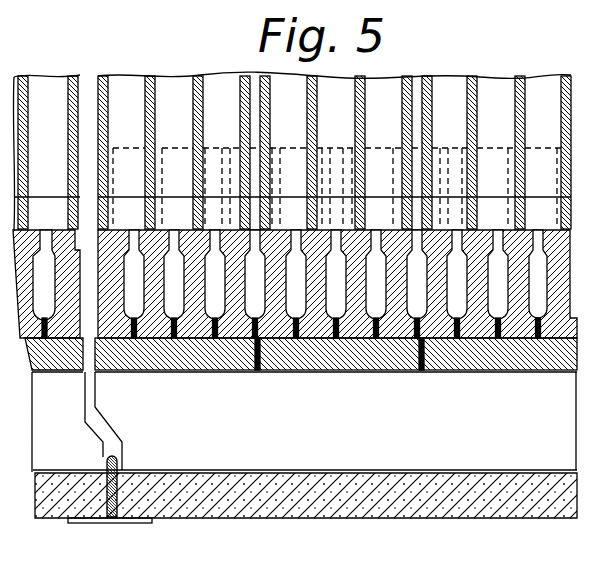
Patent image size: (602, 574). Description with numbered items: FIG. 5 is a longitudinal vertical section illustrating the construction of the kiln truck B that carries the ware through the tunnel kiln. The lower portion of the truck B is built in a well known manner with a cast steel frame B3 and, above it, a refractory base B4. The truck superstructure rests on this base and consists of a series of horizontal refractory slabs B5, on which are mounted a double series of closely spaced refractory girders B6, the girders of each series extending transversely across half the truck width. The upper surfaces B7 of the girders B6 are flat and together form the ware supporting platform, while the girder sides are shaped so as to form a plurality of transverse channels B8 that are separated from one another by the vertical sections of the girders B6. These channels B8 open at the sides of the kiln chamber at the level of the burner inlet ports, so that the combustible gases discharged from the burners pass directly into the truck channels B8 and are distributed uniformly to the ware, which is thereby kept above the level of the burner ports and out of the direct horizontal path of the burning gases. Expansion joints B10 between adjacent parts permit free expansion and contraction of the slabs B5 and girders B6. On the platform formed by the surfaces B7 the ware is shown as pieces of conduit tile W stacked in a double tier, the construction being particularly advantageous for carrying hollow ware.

The conduit tile W is at (567, 88).
The upper surfaces of the girders B7 is at (523, 228).
The refractory girders B6 is at (570, 318).
The transverse channels B8 is at (335, 310).
The expansion joints B10 is at (188, 345).
The horizontal refractory slabs B5 is at (543, 362).
The refractory base B4 is at (304, 422).
The cast steel frame B3 is at (132, 522).
The truck B is at (577, 500).